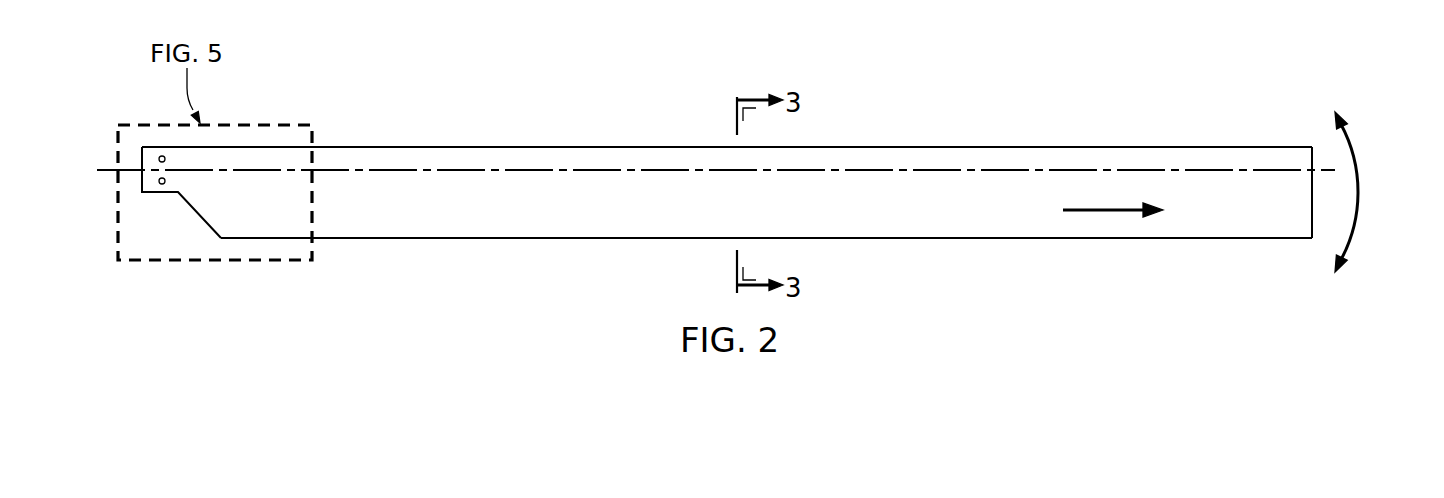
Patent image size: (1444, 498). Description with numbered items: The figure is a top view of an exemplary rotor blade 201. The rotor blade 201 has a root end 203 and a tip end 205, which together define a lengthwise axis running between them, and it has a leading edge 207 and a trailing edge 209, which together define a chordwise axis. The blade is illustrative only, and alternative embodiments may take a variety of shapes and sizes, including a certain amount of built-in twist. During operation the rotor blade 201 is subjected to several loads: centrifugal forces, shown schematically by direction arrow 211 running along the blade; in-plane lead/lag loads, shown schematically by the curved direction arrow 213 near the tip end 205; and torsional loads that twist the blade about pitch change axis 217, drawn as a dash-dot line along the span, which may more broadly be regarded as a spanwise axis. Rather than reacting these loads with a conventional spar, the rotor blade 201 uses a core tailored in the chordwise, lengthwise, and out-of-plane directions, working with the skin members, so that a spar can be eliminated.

The rotor blade 201 is at (711, 190).
The root end 203 is at (156, 212).
The tip end 205 is at (1269, 278).
The leading edge 207 is at (561, 134).
The trailing edge 209 is at (503, 254).
The direction arrow 211 is at (1101, 212).
The direction arrow 213 is at (1358, 180).
The pitch change axis 217 is at (895, 169).